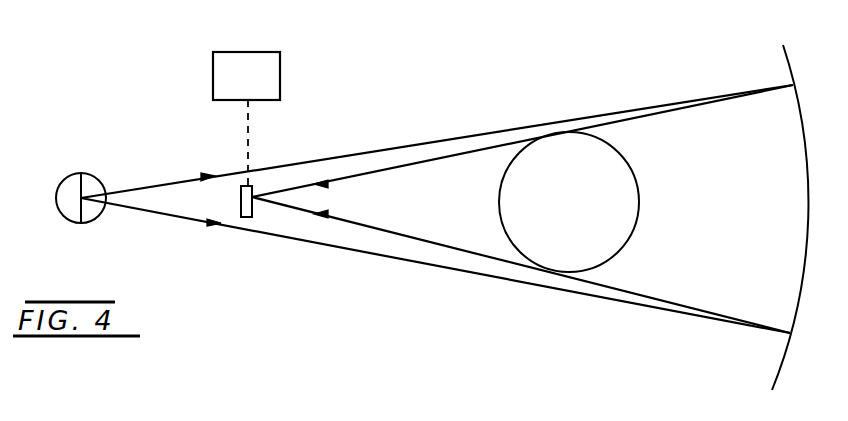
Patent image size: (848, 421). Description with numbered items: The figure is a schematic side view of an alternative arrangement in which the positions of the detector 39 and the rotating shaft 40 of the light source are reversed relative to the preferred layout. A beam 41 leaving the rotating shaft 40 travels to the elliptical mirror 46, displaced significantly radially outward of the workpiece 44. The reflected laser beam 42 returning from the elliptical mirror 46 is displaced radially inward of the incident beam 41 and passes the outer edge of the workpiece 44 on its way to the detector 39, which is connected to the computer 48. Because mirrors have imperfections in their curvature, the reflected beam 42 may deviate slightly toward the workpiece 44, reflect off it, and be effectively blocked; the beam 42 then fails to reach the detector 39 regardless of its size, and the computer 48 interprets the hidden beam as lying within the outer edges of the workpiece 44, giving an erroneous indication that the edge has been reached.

The detector 39 is at (248, 217).
The rotating shaft 40 is at (81, 173).
The incident beam 41 is at (347, 153).
The reflected laser beam 42 is at (425, 158).
The workpiece 44 is at (622, 253).
The elliptical mirror 46 is at (783, 45).
The computer 48 is at (246, 119).